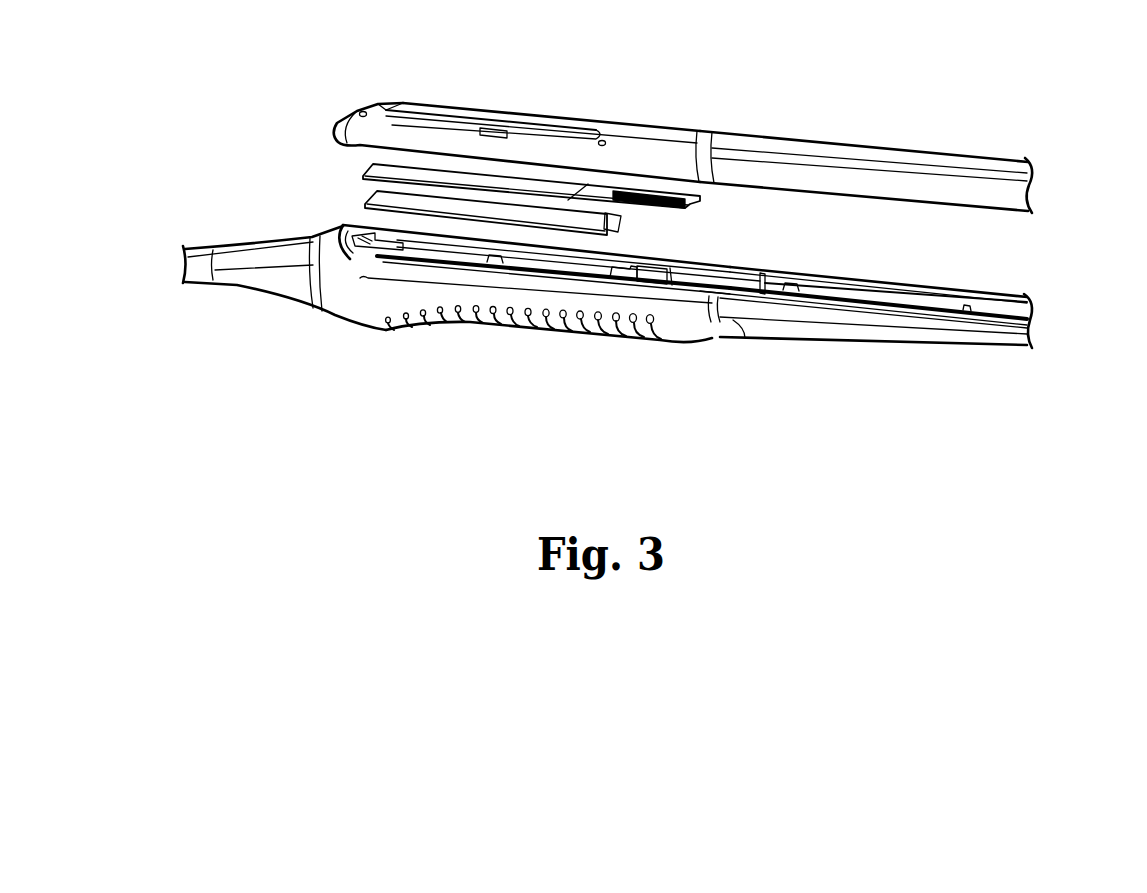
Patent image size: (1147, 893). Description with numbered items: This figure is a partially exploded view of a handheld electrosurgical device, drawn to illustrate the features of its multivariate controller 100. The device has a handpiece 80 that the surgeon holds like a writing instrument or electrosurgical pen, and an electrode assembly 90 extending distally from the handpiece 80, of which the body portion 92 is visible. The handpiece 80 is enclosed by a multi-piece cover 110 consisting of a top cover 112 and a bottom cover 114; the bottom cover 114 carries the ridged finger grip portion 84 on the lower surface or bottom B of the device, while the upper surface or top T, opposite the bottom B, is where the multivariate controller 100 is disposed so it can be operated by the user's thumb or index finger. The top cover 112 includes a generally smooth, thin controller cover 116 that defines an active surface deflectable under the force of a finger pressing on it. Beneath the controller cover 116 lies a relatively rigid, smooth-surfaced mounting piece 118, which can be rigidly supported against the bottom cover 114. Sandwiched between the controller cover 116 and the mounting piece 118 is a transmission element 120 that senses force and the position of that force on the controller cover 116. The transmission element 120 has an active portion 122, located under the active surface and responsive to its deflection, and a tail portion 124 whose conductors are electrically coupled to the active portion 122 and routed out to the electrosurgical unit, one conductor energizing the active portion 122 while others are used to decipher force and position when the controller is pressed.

The multivariate controller 100 is at (300, 126).
The top T is at (662, 116).
The controller cover 116 is at (553, 117).
The top cover 112 is at (851, 150).
The transmission element 120 is at (352, 170).
The active portion 122 is at (375, 197).
The tail portion 124 is at (692, 207).
The mounting piece 118 is at (621, 228).
The electrode assembly 90 is at (217, 420).
The body portion 92 is at (252, 320).
The handpiece 80 is at (592, 410).
The bottom B is at (686, 358).
The finger grip portion 84 is at (498, 316).
The multi-piece cover 110 is at (1056, 268).
The bottom cover 114 is at (746, 342).